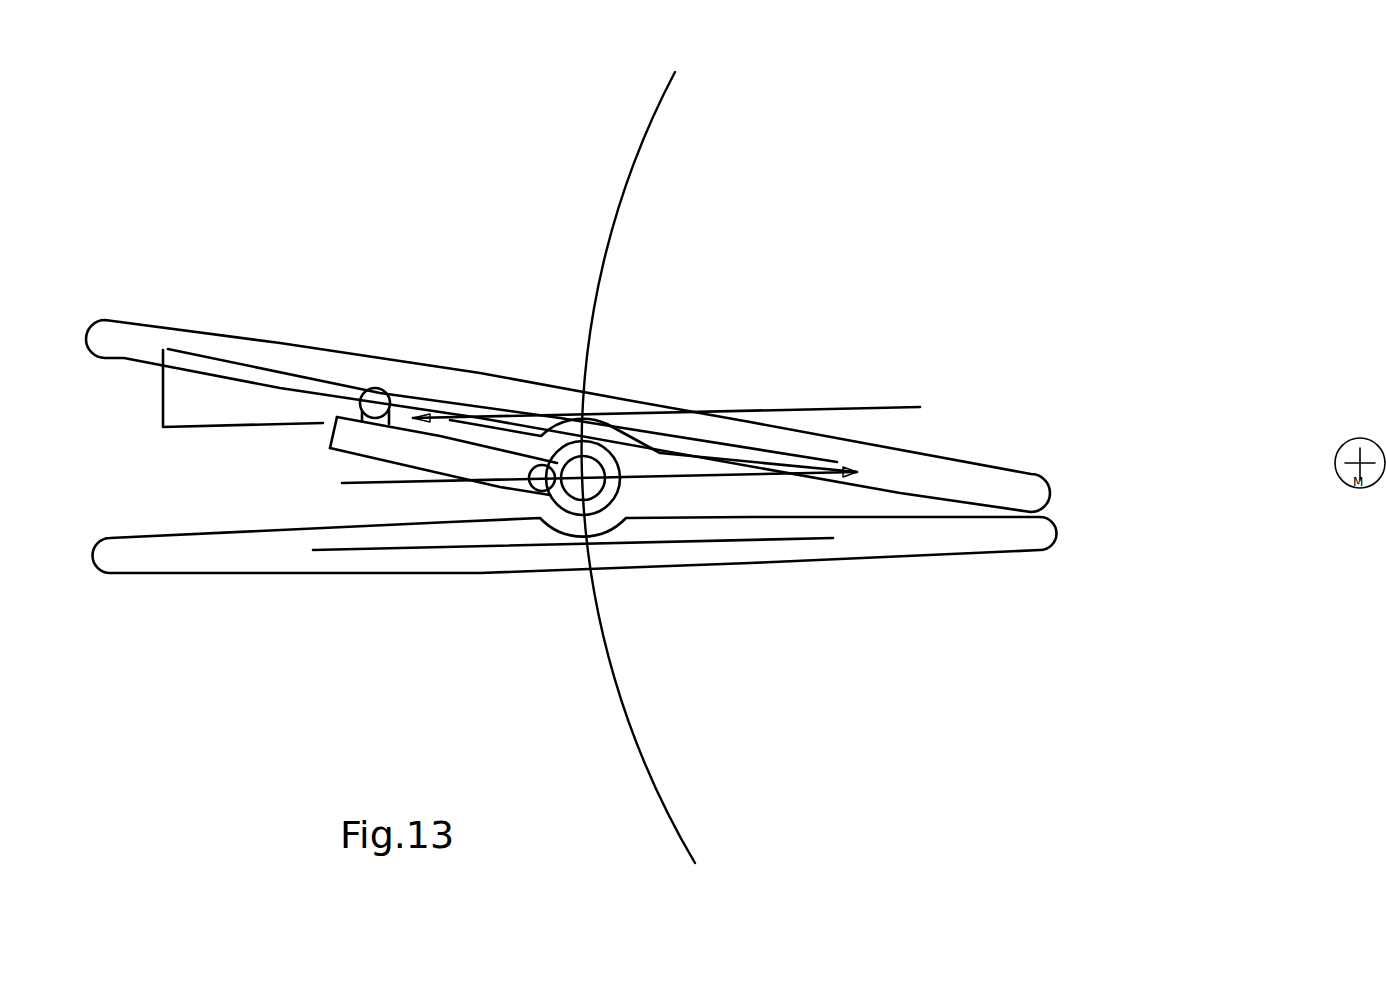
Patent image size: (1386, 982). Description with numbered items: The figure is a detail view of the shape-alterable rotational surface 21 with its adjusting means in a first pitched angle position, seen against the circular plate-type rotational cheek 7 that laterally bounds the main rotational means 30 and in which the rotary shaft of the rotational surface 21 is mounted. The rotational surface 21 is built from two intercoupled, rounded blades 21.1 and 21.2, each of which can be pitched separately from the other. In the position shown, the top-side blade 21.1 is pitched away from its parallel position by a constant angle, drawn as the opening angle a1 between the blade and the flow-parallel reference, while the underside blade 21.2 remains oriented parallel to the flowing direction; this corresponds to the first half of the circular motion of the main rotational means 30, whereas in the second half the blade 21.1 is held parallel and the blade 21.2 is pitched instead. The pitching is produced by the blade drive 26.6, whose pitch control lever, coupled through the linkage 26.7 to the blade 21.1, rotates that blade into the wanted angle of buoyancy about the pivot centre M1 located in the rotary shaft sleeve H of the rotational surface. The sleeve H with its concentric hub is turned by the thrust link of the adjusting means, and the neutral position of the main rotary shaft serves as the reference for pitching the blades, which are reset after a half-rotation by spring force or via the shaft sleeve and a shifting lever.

The rotational cheek 7 is at (707, 175).
The main rotational means 30 is at (300, 245).
The rotational surface 21 is at (215, 338).
The blade 21.1 is at (942, 477).
The blade 21.2 is at (940, 548).
The blade drive 26.6 is at (428, 447).
The linkage 26.7 is at (357, 443).
The pivot center M1 is at (599, 538).
The sleeve H is at (608, 497).
The opening angle a1 is at (519, 405).